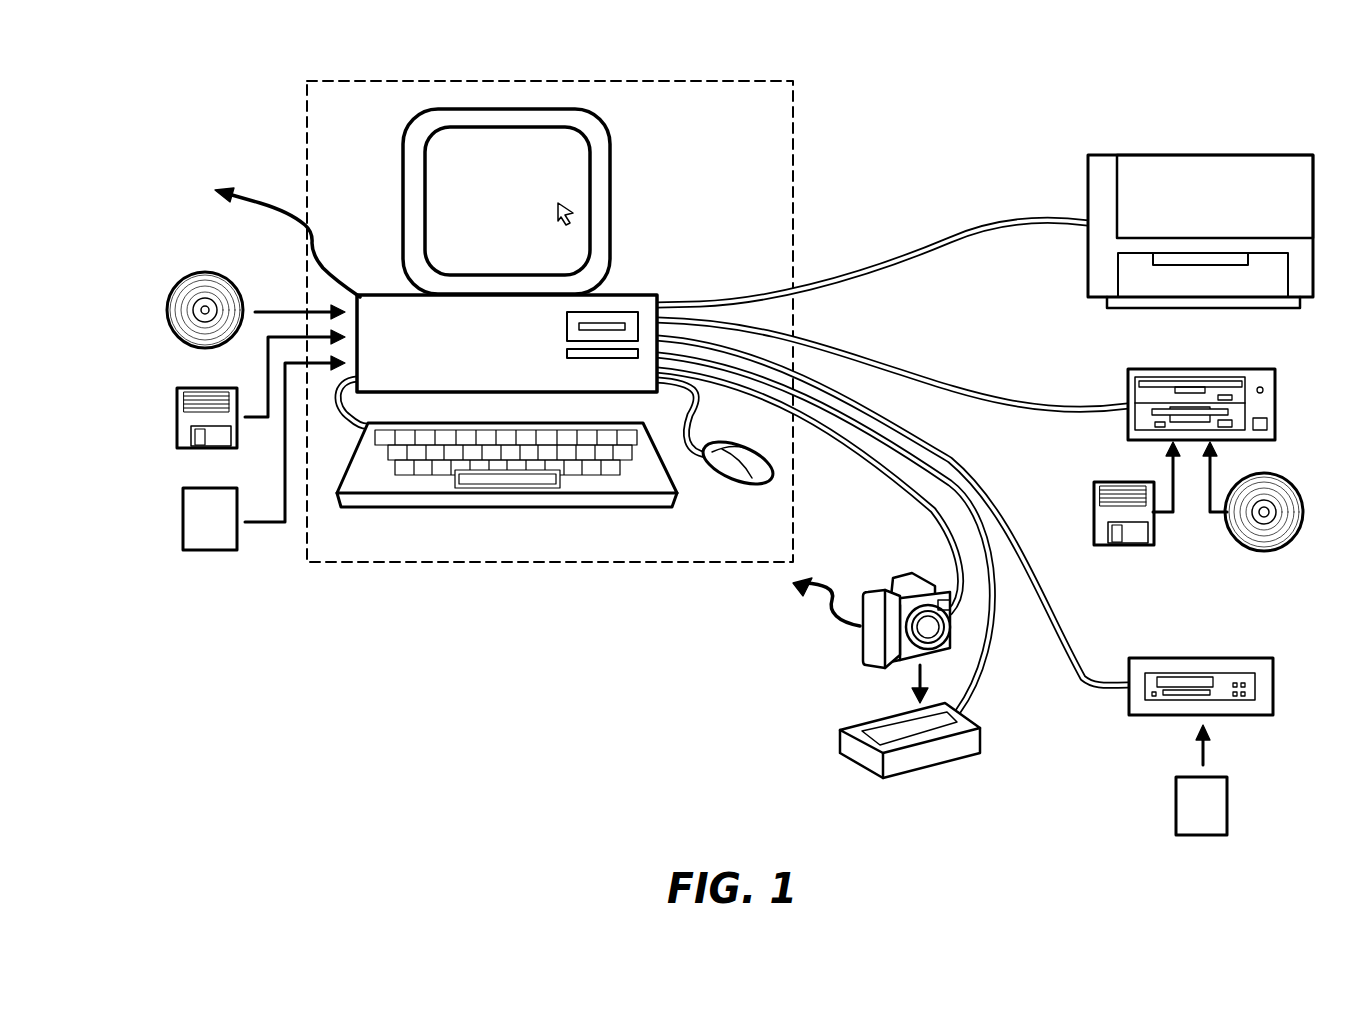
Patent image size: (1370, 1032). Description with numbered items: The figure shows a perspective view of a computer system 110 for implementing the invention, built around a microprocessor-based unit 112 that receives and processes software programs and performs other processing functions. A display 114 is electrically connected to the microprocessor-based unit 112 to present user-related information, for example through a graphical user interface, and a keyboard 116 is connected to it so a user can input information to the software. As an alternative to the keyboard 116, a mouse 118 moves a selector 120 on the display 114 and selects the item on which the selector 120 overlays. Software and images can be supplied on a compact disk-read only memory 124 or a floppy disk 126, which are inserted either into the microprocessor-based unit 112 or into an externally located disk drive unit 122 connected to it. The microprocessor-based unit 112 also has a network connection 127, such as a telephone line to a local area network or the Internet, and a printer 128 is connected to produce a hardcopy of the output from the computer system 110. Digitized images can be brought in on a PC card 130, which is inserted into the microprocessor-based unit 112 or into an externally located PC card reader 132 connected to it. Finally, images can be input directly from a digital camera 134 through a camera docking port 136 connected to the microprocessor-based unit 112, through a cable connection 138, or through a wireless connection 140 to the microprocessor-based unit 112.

The computer system 110 is at (793, 140).
The microprocessor-based unit 112 is at (385, 293).
The display 114 is at (417, 114).
The keyboard 116 is at (427, 508).
The mouse 118 is at (722, 470).
The selector 120 is at (580, 211).
The externally located disk drive unit 122 is at (1278, 397).
The compact disk-read only memory (CD-ROM) 124 is at (168, 312).
The floppy disk 126 is at (175, 422).
The network connection 127 is at (265, 208).
The printer 128 is at (1193, 155).
The personal computer card (PC card) 130 is at (183, 522).
The externally located PC card reader 132 is at (1275, 683).
The digital camera 134 is at (910, 572).
The camera docking port 136 is at (838, 737).
The cable connection 138 is at (889, 483).
The wireless connection 140 is at (821, 620).